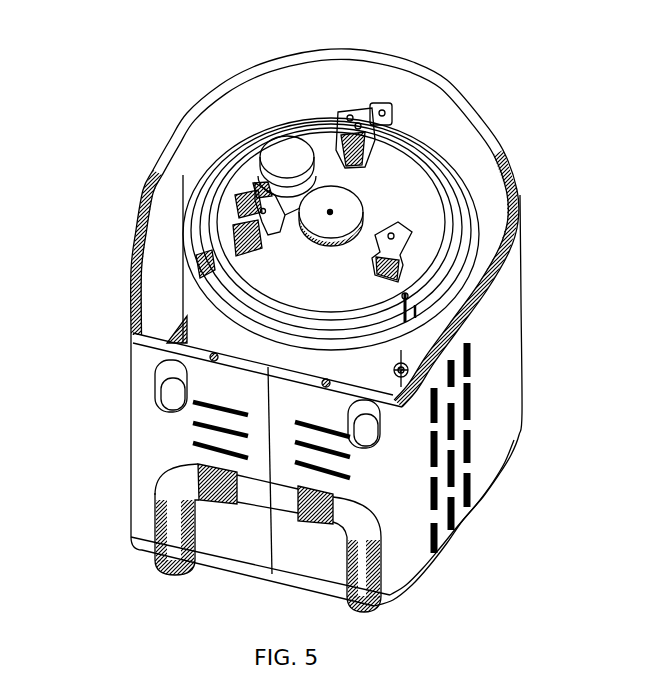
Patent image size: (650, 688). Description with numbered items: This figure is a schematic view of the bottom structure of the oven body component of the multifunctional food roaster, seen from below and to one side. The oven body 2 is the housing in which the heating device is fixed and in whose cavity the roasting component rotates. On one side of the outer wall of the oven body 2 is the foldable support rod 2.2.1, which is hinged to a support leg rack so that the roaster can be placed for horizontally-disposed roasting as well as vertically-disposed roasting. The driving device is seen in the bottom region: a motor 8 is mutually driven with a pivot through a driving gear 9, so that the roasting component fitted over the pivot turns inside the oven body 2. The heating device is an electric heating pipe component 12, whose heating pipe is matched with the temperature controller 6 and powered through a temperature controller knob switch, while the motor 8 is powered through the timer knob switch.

The oven body 2 is at (492, 357).
The foldable support rod 2.2.1 is at (163, 550).
The temperature controller 6 is at (408, 381).
The motor 8 is at (280, 150).
The driving gear 9 is at (341, 140).
The electric heating pipe component 12 is at (217, 267).